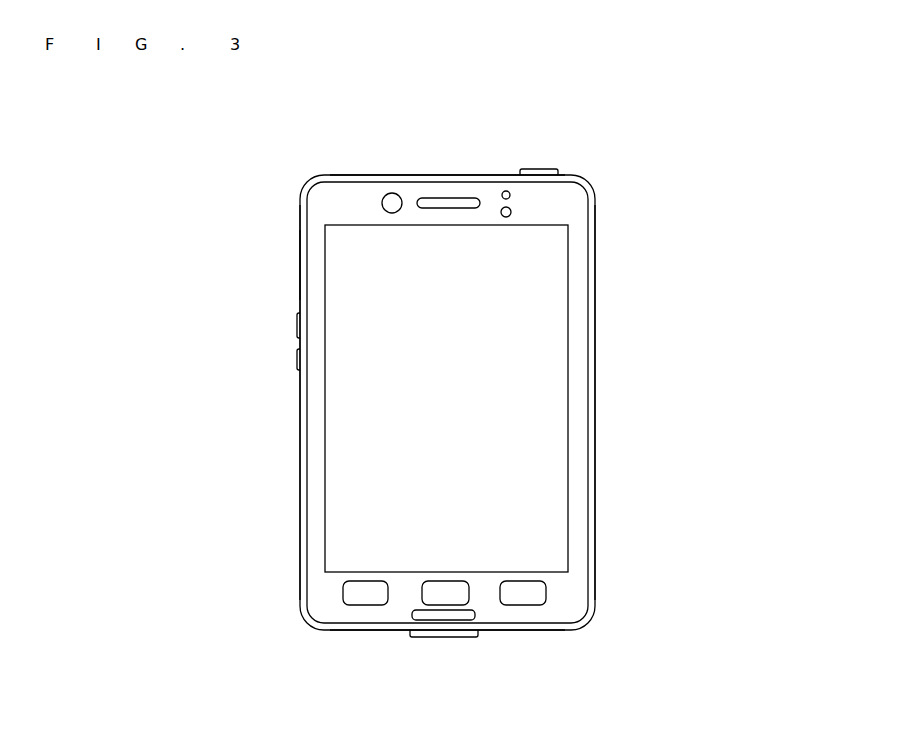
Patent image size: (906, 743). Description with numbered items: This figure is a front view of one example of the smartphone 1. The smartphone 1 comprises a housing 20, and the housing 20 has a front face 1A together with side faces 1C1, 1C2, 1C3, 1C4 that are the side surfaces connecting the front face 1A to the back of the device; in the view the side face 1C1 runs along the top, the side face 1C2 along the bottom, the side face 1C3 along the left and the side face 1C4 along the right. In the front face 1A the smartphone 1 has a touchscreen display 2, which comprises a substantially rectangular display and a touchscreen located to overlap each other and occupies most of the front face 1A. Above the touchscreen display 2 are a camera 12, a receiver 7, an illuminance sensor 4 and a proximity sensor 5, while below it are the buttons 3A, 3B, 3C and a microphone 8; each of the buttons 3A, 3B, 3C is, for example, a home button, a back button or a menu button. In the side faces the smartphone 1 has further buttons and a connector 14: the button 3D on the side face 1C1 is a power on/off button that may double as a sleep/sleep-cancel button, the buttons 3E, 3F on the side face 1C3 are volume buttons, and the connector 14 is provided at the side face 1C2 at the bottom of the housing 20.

The smartphone 1 is at (576, 153).
The front face 1A is at (316, 453).
The side face 1C1 is at (418, 178).
The side face 1C2 is at (333, 631).
The side face 1C3 is at (302, 512).
The side face 1C4 is at (590, 474).
The housing 20 is at (302, 284).
The touchscreen display 2 is at (517, 358).
The button 3A is at (366, 606).
The button 3B is at (422, 591).
The button 3C is at (525, 606).
The button 3D is at (538, 169).
The button 3E is at (297, 325).
The button 3F is at (297, 359).
The illuminance sensor 4 is at (506, 190).
The proximity sensor 5 is at (512, 212).
The receiver 7 is at (446, 198).
The microphone 8 is at (475, 617).
The camera 12 is at (392, 193).
The connector 14 is at (445, 638).